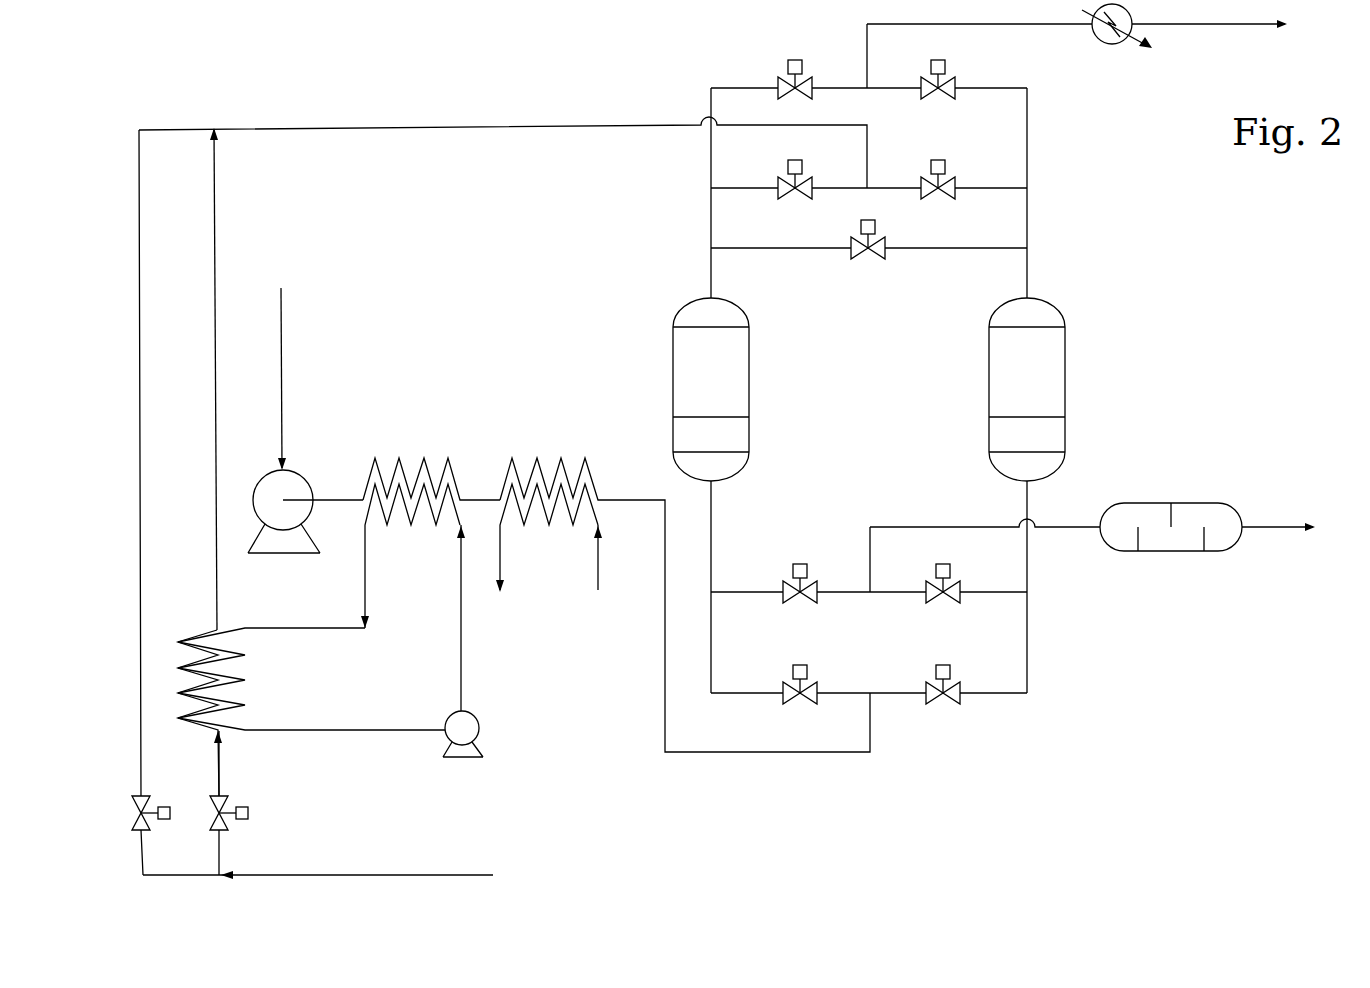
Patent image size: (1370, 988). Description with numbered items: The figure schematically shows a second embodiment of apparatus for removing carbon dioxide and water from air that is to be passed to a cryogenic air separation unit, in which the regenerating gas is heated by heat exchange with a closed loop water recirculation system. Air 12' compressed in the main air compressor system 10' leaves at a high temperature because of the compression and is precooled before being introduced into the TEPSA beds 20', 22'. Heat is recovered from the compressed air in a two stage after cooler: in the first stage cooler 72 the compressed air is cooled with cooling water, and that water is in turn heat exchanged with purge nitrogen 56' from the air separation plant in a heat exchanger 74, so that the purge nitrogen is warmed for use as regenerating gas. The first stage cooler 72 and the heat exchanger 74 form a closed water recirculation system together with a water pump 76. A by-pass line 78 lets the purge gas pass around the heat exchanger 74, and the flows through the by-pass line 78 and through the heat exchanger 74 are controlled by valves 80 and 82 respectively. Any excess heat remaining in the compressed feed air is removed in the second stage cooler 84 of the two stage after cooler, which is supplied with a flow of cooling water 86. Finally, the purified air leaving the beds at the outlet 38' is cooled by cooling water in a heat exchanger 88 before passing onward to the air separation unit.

The main air compressor system 10' is at (305, 502).
The air 12' is at (316, 379).
The TEPSA bed 20' is at (753, 389).
The TEPSA bed 22' is at (1072, 389).
The outlet 38' is at (1077, 40).
The purge nitrogen 56' is at (318, 859).
The first stage cooler 72 is at (422, 462).
The heat exchanger 74 is at (235, 700).
The water pump 76 is at (482, 706).
The by-pass line 78 is at (141, 542).
The valve 80 is at (141, 793).
The valve 82 is at (219, 795).
The second stage cooler 84 is at (535, 462).
The cooling water 86 is at (597, 565).
The heat exchanger 88 is at (1103, 46).